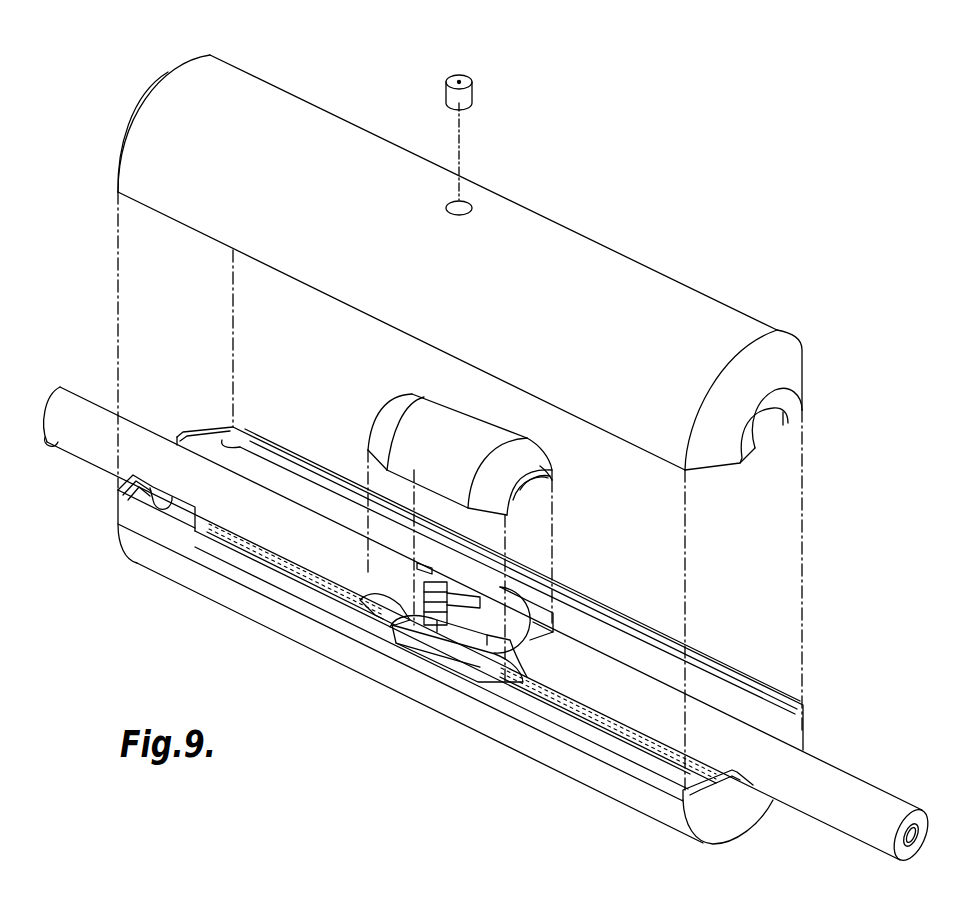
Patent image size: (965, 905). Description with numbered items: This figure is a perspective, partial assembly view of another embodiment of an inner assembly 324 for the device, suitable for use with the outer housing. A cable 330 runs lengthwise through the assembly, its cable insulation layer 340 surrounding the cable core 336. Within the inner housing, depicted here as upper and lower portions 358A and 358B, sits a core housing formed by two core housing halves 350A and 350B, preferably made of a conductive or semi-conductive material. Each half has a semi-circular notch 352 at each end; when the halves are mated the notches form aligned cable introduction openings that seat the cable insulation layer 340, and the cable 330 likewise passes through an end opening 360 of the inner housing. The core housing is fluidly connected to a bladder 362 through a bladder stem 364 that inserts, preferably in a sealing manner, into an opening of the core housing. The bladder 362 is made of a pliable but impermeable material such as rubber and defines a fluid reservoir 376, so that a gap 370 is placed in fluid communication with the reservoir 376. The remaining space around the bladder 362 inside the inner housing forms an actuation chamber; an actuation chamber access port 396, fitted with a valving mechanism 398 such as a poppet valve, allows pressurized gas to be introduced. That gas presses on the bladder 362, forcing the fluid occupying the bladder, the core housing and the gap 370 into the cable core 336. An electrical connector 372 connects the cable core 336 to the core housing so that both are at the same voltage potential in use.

The inner assembly 324 is at (815, 237).
The cable 330 is at (168, 437).
The cable core 336 is at (473, 610).
The cable insulation layer 340 is at (73, 437).
The core housing half 350A is at (393, 401).
The core housing half 350B is at (452, 650).
The semi-circular notch 352 is at (528, 480).
The upper housing cover 358A is at (130, 112).
The lower housing base 358B is at (120, 543).
The tube cradle notch 360 is at (180, 520).
The bladder 362 is at (262, 453).
The bladder stem 364 is at (460, 626).
The gap 370 is at (392, 626).
The electrical connector 372 is at (440, 568).
The fluid reservoir 376 is at (640, 742).
The actuation chamber access port 396 is at (467, 208).
The valving mechanism 398 is at (472, 98).